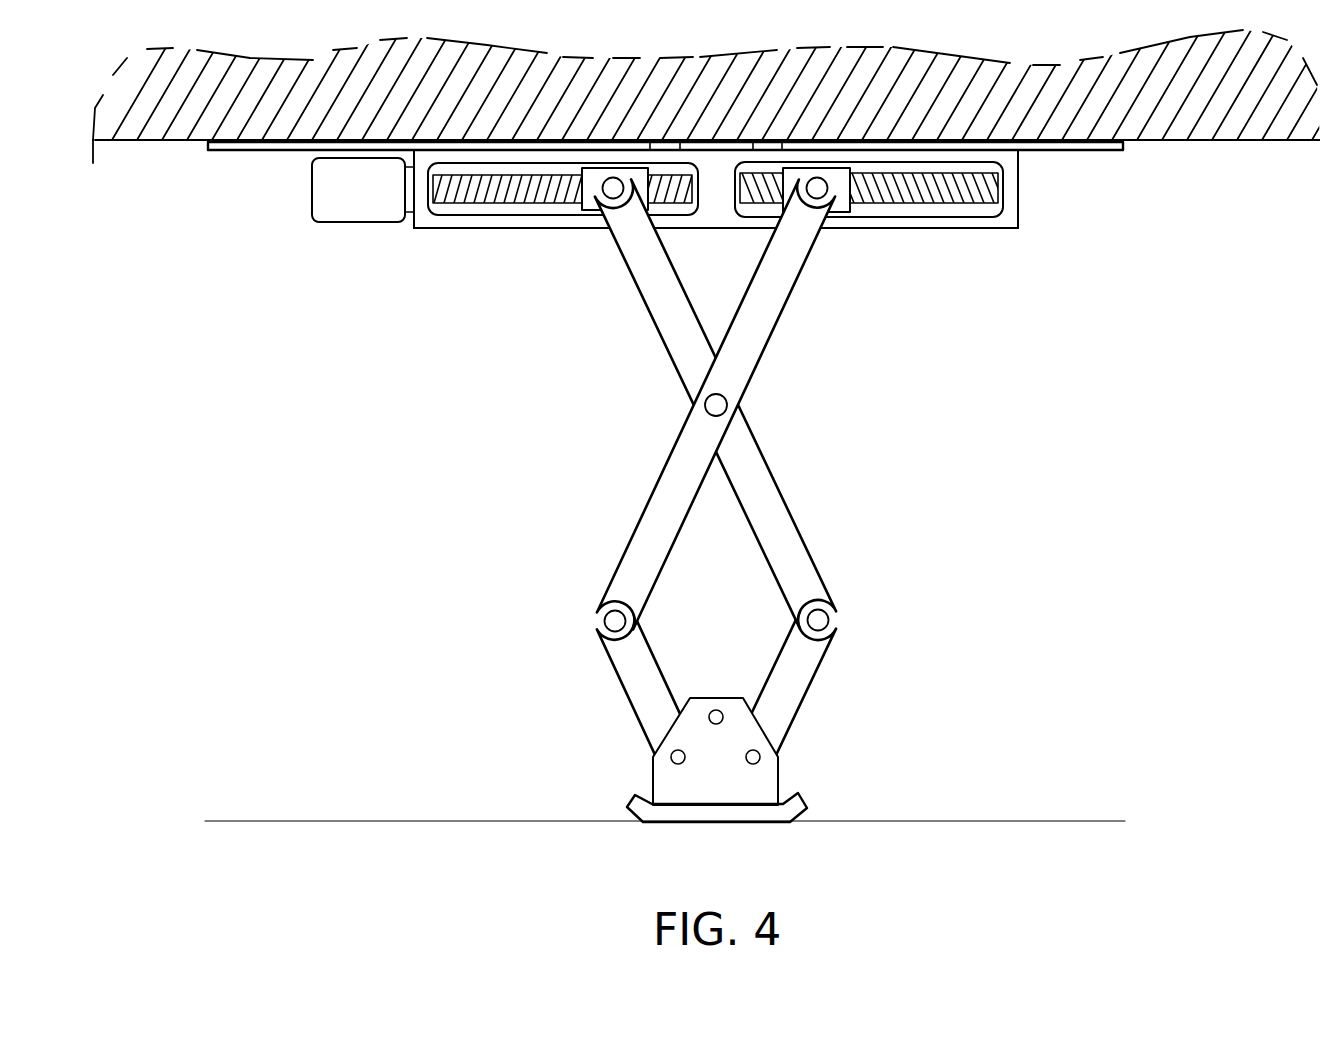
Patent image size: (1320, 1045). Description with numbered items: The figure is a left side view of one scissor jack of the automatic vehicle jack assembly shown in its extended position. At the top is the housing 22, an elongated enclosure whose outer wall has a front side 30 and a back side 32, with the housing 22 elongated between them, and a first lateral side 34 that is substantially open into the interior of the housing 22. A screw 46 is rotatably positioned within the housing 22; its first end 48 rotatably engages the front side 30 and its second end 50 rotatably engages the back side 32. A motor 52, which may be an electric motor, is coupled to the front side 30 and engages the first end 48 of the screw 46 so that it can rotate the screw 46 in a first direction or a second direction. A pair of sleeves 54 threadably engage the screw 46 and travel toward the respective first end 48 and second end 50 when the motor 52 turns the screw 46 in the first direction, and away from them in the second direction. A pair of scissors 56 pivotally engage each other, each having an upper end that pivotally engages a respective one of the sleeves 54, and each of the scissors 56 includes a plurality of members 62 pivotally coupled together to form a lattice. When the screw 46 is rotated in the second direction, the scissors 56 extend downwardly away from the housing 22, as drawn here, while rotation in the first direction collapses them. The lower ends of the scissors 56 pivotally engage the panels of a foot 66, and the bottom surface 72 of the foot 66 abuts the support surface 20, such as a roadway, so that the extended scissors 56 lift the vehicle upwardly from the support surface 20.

The support surface 20 is at (1042, 821).
The housing 22 is at (413, 229).
The front side 30 is at (414, 190).
The back side 32 is at (1018, 188).
The first lateral side 34 is at (706, 205).
The screw 46 is at (918, 203).
The first end 48 is at (428, 205).
The second end 50 is at (1005, 215).
The motor 52 is at (312, 188).
The sleeves 54 is at (583, 210).
The scissors 56 is at (612, 516).
The members 62 is at (807, 655).
The foot 66 is at (640, 798).
The bottom surface 72 is at (760, 822).